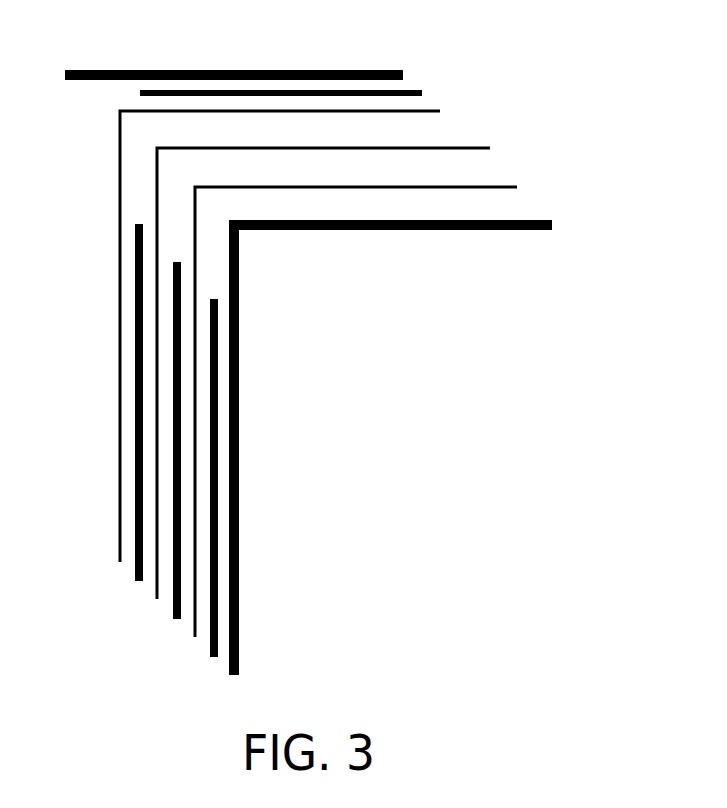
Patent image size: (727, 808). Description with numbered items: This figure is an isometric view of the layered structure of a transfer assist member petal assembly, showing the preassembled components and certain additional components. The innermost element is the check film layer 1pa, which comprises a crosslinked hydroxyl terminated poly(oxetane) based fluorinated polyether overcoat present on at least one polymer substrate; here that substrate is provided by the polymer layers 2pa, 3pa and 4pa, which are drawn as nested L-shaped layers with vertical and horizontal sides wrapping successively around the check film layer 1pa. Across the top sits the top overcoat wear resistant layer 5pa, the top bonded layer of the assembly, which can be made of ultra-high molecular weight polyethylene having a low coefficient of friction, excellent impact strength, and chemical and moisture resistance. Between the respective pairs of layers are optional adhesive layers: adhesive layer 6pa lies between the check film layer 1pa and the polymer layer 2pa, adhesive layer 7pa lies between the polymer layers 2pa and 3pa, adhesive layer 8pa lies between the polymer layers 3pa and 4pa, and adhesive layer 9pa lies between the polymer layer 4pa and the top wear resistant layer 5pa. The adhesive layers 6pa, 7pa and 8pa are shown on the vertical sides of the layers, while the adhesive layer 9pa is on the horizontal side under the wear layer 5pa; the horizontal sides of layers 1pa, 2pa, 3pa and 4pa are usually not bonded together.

The check film layer 1pa is at (552, 225).
The polymer layer 2pa is at (517, 187).
The polymer layer 3pa is at (490, 148).
The polymer layer 4pa is at (440, 111).
The top overcoat wear resistant layer 5pa is at (403, 75).
The adhesive layer 6pa is at (210, 540).
The adhesive layer 7pa is at (173, 437).
The adhesive layer 8pa is at (135, 323).
The adhesive layer 9pa is at (140, 93).